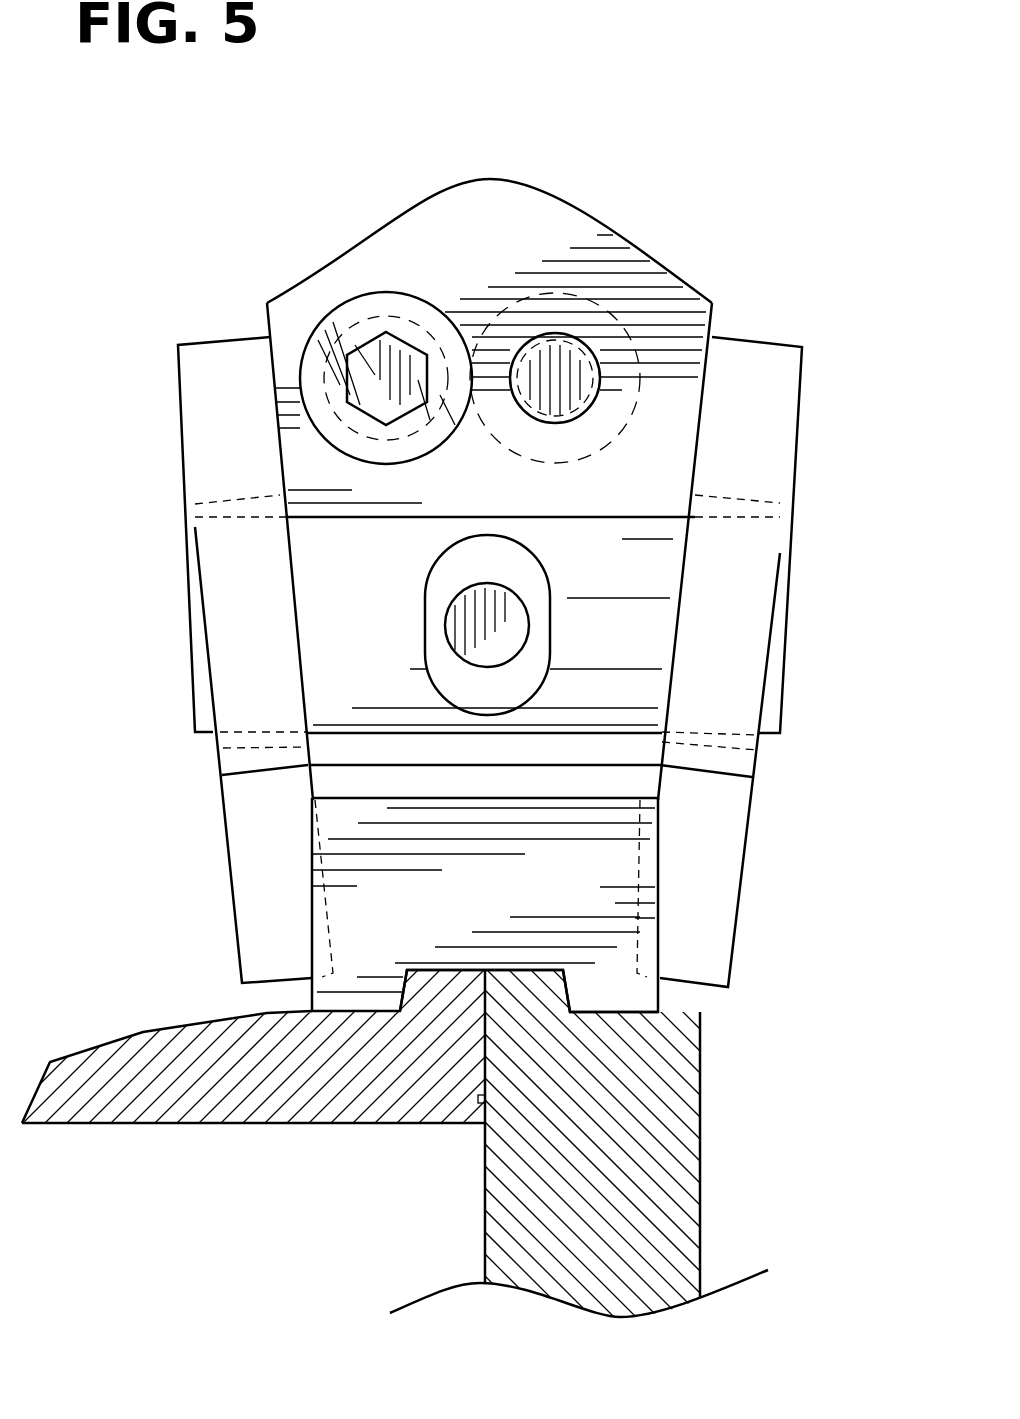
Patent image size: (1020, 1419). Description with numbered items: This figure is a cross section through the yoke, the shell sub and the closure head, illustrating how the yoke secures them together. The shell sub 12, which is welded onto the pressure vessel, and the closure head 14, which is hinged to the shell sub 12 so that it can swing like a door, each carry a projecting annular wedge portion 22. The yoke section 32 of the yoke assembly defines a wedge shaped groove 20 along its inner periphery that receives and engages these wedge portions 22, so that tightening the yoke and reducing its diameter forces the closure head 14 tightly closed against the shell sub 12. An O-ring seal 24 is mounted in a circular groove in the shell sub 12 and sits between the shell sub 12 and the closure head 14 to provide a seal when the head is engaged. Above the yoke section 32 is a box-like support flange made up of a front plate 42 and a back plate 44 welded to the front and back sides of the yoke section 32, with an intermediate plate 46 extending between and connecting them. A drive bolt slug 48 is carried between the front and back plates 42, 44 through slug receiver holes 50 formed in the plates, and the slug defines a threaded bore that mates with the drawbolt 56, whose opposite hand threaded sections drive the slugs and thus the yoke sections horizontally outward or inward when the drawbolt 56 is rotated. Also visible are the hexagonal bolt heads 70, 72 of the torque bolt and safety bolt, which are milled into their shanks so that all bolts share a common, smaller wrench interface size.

The shell sub 12 is at (225, 1105).
The closure head 14 is at (670, 1185).
The wedge shaped groove 20 is at (425, 967).
The annular wedge portions 22 is at (445, 992).
The O-ring seal 24 is at (478, 1103).
The yoke section 32 is at (595, 858).
The front plate 42 is at (200, 372).
The back plate 44 is at (778, 378).
The intermediate plate 46 is at (613, 232).
The drive bolt slug 48 is at (200, 692).
The slug receiver holes 50 is at (710, 747).
The drawbolt 56 is at (447, 597).
The bolt head of torque bolt 70 is at (595, 405).
The bolt head of safety bolt 72 is at (362, 418).